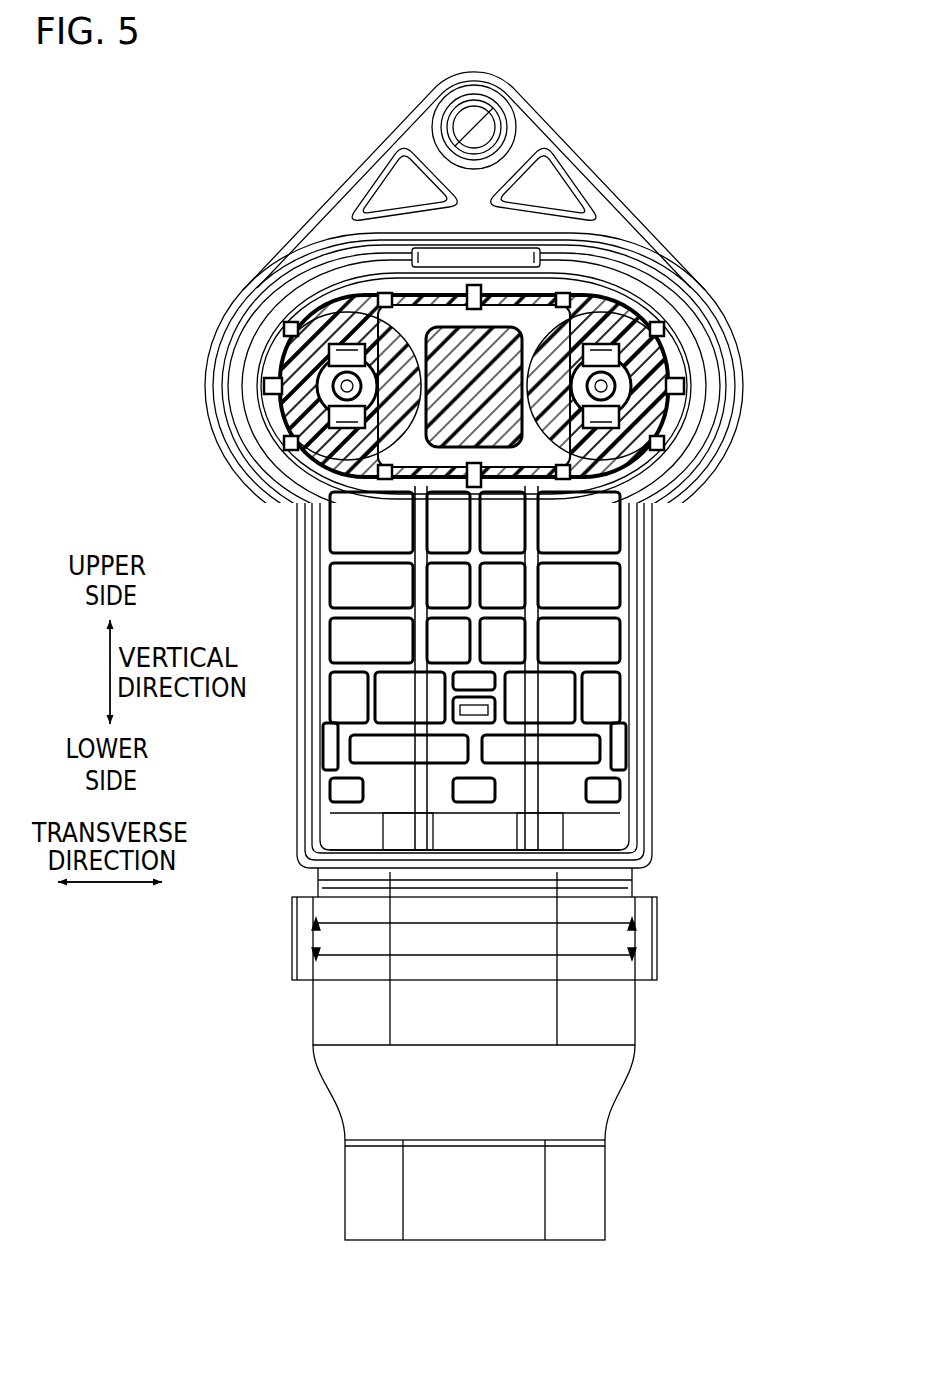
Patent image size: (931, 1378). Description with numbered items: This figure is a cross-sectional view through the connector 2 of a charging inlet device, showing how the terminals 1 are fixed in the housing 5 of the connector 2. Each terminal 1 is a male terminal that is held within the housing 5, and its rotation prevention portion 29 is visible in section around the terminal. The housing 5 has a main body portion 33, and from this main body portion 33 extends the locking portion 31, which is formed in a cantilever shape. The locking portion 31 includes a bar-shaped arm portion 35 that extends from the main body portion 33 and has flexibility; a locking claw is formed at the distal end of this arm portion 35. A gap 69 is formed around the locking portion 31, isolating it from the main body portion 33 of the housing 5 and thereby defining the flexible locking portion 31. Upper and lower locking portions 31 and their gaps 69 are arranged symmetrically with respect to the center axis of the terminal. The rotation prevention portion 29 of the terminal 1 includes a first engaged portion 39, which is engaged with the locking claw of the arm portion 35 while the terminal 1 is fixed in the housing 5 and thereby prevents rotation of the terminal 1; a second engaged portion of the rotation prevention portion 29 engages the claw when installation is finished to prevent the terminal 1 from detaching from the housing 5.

The terminal 1 is at (308, 380).
The connector 2 is at (710, 234).
The housing 5 is at (597, 635).
The rotation prevention portion 29 is at (316, 409).
The locking portion 31 is at (300, 292).
The main body portion 33 is at (602, 653).
The arm portion 35 is at (340, 331).
The first engaged portion 39 is at (315, 290).
The gap 69 is at (345, 343).